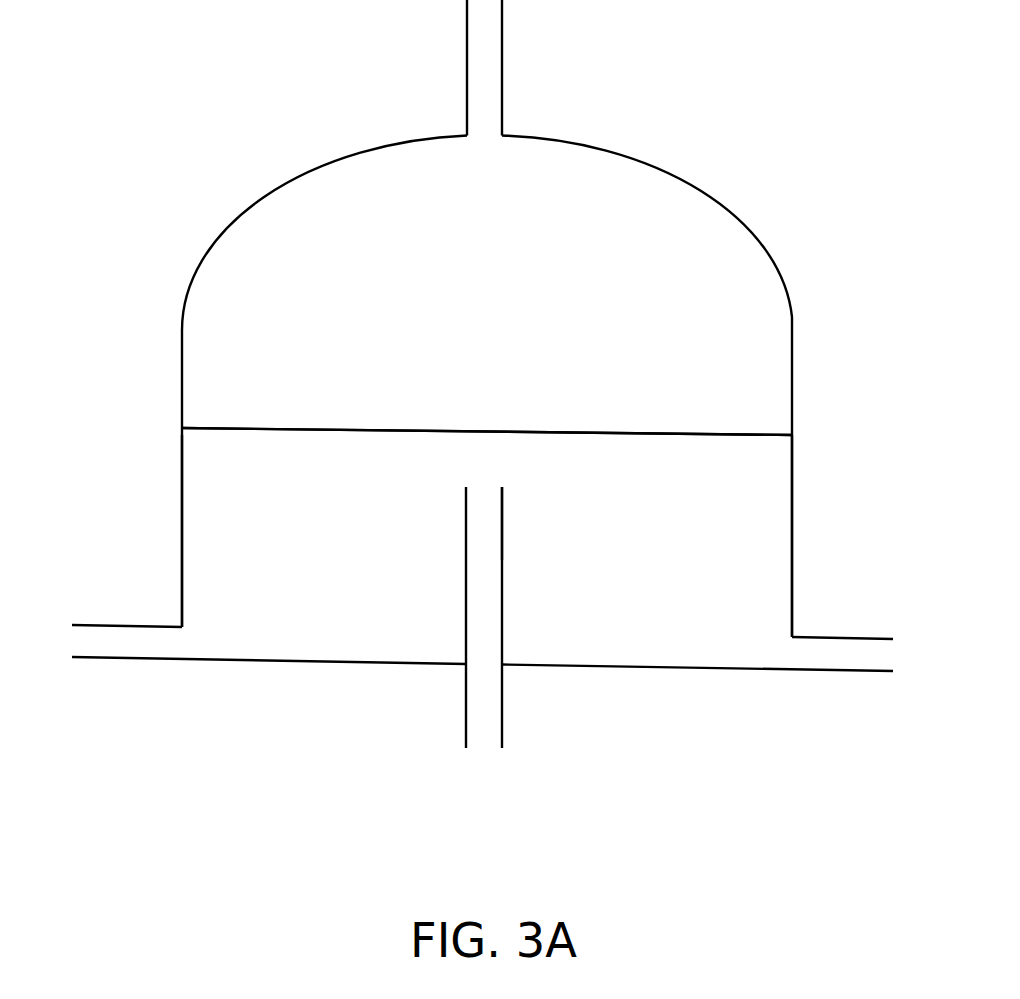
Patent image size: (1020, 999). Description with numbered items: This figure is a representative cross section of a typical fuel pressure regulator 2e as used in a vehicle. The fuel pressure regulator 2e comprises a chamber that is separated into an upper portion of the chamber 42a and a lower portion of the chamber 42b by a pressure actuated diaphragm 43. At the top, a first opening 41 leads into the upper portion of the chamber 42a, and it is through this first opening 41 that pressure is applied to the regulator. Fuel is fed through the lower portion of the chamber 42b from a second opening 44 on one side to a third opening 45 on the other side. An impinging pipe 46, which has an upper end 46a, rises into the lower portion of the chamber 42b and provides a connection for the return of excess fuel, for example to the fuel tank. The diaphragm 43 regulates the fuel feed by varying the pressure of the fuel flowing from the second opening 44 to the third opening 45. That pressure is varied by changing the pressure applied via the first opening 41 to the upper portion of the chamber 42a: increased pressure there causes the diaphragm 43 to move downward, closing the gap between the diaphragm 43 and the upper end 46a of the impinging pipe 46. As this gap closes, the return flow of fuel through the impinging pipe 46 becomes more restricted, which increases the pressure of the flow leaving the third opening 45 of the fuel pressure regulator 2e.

The fuel pressure regulator 2e is at (788, 214).
The first opening 41 is at (466, 70).
The upper portion of the chamber 42a is at (348, 283).
The lower portion of the chamber 42b is at (310, 547).
The pressure actuated diaphragm 43 is at (700, 380).
The second opening 44 is at (163, 658).
The third opening 45 is at (808, 671).
The impinging pipe 46 is at (466, 727).
The upper end of the impinging pipe 46a is at (503, 556).